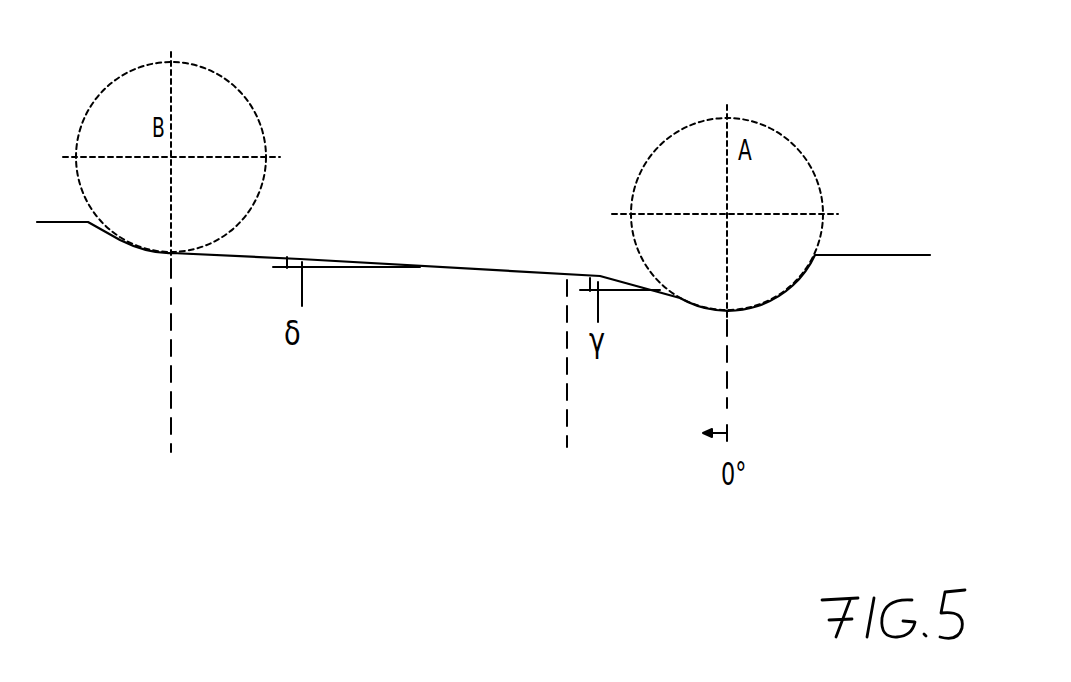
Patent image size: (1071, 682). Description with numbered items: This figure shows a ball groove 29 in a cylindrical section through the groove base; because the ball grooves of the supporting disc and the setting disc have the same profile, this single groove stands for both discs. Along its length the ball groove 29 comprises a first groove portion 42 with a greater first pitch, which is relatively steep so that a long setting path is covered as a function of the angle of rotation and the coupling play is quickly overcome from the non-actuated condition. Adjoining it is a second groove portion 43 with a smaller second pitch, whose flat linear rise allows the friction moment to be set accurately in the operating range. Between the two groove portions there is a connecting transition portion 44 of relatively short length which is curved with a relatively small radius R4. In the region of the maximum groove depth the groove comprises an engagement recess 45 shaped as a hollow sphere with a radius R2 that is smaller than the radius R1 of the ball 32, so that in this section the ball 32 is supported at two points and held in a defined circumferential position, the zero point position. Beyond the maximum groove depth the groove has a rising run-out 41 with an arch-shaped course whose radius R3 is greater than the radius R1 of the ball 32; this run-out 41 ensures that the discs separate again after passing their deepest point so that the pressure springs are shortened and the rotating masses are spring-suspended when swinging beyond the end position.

The ball groove 29 is at (342, 258).
The ball 32 is at (763, 140).
The run-out 41 is at (816, 255).
The first groove portion 42 is at (613, 270).
The second groove portion 43 is at (455, 267).
The transition portion 44 is at (558, 270).
The engagement recess 45 is at (720, 300).
The radius of the balls R1 is at (727, 213).
The radius of the engagement recesses R2 is at (750, 312).
The radius of the run-outs R3 is at (797, 282).
The radius of the transition portion R4 is at (565, 271).